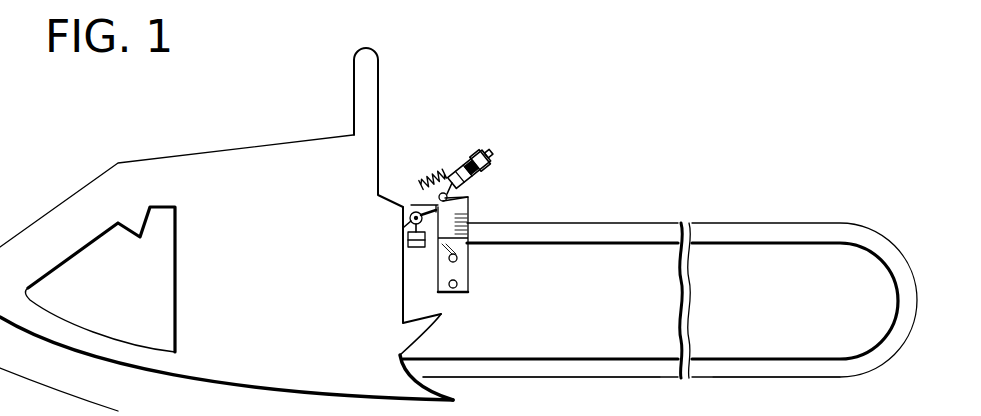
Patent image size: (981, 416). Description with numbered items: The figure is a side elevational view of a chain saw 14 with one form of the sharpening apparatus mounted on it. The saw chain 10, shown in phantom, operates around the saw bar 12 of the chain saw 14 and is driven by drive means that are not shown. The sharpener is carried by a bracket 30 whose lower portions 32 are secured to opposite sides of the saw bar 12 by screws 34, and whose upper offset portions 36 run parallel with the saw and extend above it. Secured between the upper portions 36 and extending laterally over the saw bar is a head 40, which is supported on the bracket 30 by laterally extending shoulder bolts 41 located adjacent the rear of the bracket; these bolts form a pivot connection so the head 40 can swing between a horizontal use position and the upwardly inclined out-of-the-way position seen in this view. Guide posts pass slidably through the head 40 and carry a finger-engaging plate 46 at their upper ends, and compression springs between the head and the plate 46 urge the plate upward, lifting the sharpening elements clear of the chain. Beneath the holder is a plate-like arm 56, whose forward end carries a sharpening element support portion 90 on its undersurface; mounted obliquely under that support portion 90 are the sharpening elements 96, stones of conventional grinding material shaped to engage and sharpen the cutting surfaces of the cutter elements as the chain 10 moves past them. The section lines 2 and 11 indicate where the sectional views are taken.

The section line 2- 2 is at (440, 158).
The saw chain 10 is at (713, 223).
The section line 11- 11 is at (406, 195).
The saw bar 12 is at (660, 342).
The chain saw 14 is at (203, 165).
The bracket 30 is at (468, 220).
The lower portions 32 is at (458, 258).
The screws 34 is at (458, 284).
The upper offset portions 36 is at (460, 208).
The head 40 is at (450, 173).
The shoulder bolts 41 is at (475, 197).
The finger-engaging plate 46 is at (430, 178).
The plate-like arm 56 is at (473, 163).
The sharpening element support portion 90 is at (482, 158).
The sharpening elements 96 is at (487, 165).